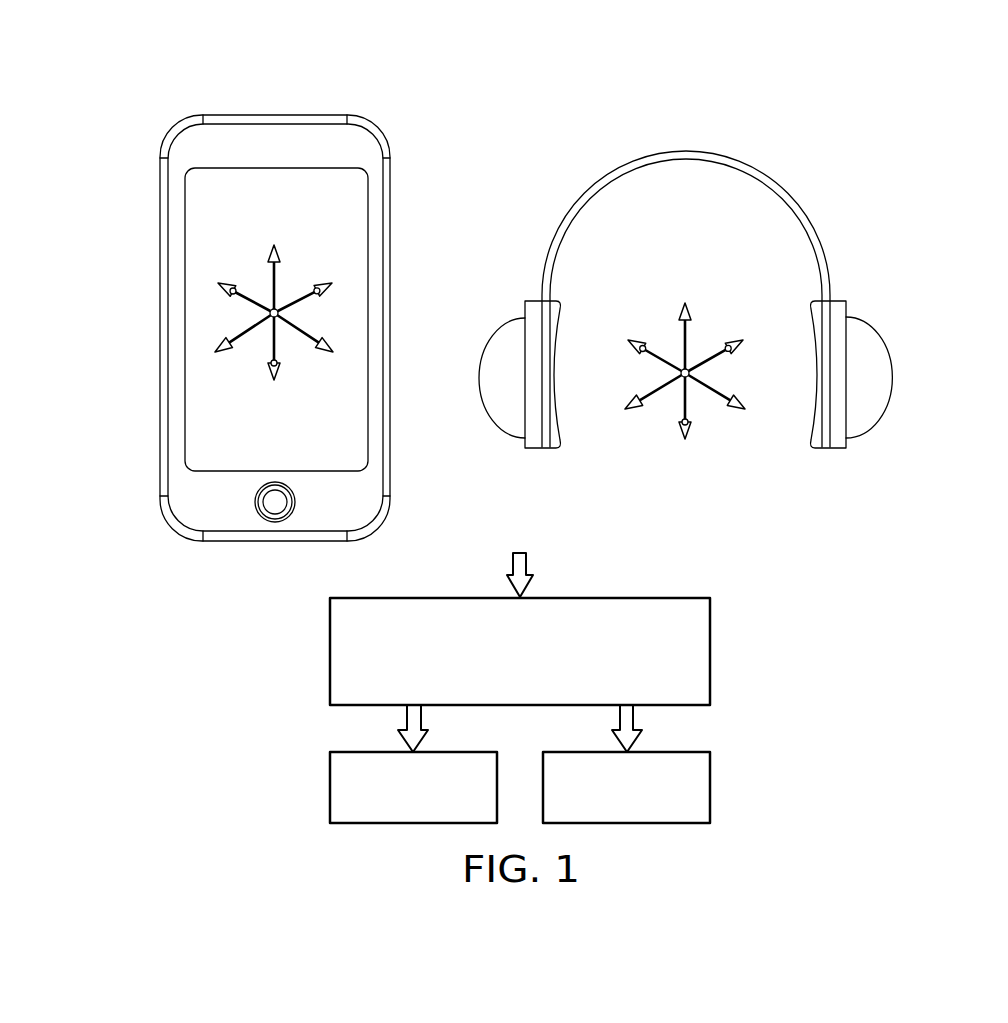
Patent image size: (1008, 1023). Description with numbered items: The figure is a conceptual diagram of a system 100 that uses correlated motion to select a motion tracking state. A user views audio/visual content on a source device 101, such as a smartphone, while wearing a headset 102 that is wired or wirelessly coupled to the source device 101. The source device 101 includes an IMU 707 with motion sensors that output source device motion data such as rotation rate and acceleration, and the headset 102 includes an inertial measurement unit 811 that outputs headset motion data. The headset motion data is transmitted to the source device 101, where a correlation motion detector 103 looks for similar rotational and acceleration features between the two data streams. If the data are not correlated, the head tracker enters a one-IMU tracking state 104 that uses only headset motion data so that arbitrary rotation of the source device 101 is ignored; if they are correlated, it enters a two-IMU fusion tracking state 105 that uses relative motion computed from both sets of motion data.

The correlated motion detection system 100 is at (412, 70).
The source device 101 is at (160, 328).
The IMU 707 is at (250, 260).
The headset 102 is at (763, 173).
The inertial measurement unit 811 is at (726, 438).
The correlation motion detector 103 is at (330, 655).
The 1-IMU tracking state 104 is at (330, 788).
The 2-IMU fusion tracking state 105 is at (710, 788).